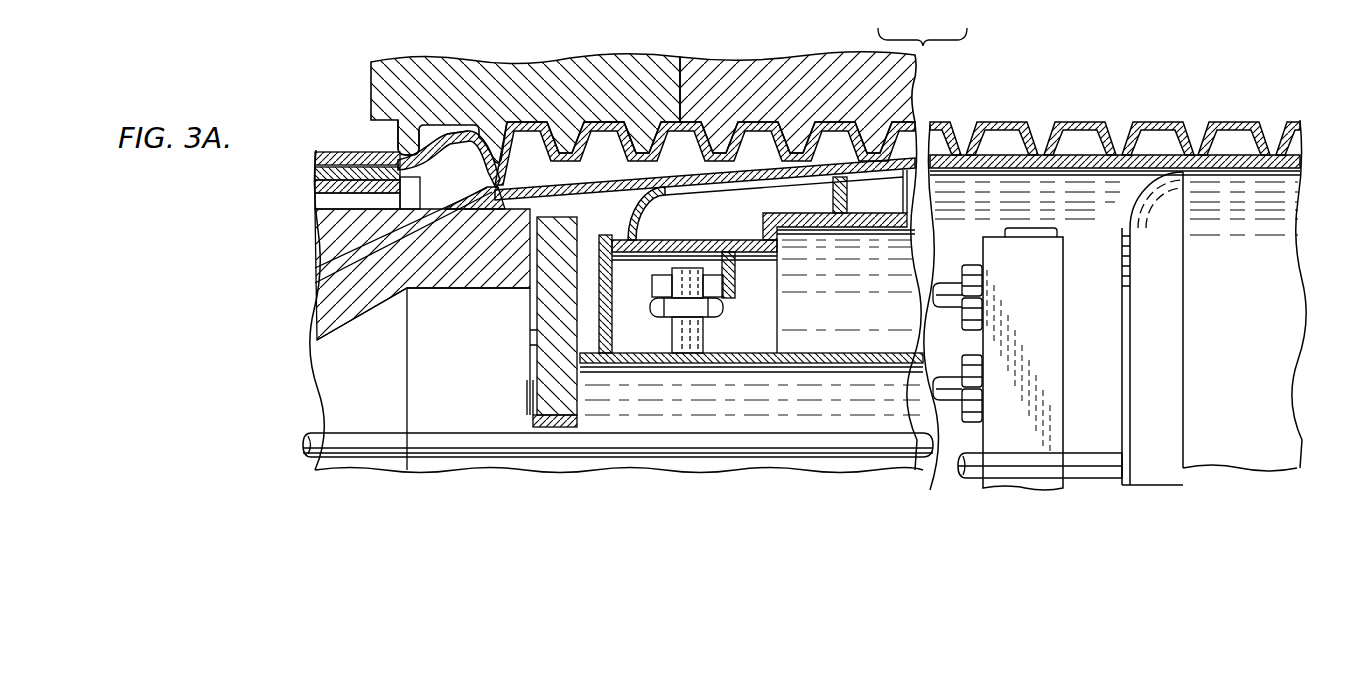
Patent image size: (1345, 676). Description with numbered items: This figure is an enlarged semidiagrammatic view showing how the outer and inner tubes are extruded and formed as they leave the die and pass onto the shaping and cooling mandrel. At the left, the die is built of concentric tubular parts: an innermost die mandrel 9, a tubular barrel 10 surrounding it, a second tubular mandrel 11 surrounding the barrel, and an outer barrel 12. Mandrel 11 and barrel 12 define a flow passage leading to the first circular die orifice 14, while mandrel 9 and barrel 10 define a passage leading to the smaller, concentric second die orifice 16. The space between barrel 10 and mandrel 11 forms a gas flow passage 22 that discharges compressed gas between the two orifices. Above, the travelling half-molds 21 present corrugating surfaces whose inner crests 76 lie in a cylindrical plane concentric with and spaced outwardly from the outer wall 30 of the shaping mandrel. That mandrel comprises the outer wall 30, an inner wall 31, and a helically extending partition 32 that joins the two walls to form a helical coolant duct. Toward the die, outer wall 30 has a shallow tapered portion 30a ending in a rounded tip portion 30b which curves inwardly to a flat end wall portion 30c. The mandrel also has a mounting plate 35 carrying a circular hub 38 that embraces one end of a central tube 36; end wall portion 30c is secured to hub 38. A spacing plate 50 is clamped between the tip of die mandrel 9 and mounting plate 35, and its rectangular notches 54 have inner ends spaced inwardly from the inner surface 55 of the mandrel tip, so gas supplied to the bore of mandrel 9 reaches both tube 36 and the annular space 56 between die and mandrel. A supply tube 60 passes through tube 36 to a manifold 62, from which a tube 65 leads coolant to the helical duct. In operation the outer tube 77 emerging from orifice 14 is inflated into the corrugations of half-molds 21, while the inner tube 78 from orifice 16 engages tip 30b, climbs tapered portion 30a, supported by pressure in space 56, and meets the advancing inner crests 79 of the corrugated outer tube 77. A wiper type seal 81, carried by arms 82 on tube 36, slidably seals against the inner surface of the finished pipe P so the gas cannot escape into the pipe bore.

The innermost die mandrel 9 is at (318, 313).
The tubular barrel 10 is at (318, 240).
The second tubular mandrel 11 is at (318, 185).
The outer barrel 12 is at (318, 158).
The first circular die orifice 14 is at (404, 178).
The second circular die orifice 16 is at (487, 210).
The half-molds 21 is at (371, 78).
The gas flow passage 22 is at (318, 200).
The outer wall 30 is at (899, 181).
The tapered portion 30a is at (747, 188).
The tip portion 30b is at (647, 210).
The end wall portion 30c is at (612, 306).
The inner wall 31 is at (880, 222).
The helically extending partition 32 is at (832, 191).
The mounting plate 35 is at (527, 385).
The central tube 36 is at (773, 362).
The circular hub 38 is at (636, 360).
The spacing plate 50 is at (528, 344).
The rectangular notches 54 is at (530, 298).
The inner surface of mandrel tip 55 is at (445, 292).
The annular space 56 is at (582, 217).
The supply tube 60 is at (432, 430).
The manifold 62 is at (1063, 342).
The tube 65 is at (953, 283).
The inner crests 76 is at (405, 147).
The outer tube 77 is at (454, 148).
The inner tube 78 is at (505, 184).
The inner crests of corrugated outer tube 79 is at (626, 168).
The wiper type seal 81 is at (1184, 355).
The arms 82 is at (1097, 458).
The pipe P is at (1180, 122).